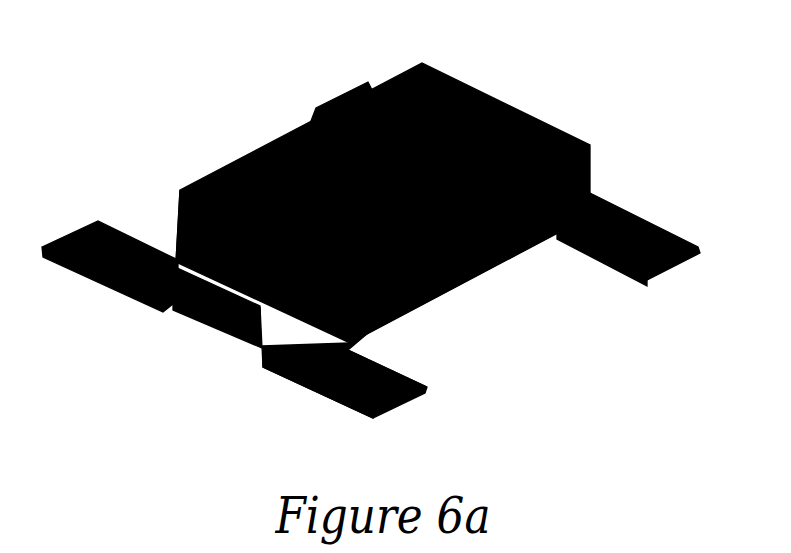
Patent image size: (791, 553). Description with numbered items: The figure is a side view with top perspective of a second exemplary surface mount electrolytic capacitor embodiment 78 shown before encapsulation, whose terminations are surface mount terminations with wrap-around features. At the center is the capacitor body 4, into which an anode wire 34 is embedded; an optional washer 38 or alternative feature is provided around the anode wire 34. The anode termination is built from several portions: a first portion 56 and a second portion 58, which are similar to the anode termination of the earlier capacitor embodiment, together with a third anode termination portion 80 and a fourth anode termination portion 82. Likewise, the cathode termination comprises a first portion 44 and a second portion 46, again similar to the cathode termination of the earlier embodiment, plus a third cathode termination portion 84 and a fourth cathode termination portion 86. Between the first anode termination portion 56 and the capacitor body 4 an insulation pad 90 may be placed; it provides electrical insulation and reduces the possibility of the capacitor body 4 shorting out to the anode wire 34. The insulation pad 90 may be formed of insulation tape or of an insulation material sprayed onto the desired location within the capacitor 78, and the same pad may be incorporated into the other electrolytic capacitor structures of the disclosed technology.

The capacitor body 4 is at (490, 264).
The anode wire 34 is at (188, 343).
The washer 38 is at (178, 238).
The first portion of the cathode termination 44 is at (628, 248).
The second portion of the cathode termination 46 is at (356, 192).
The first portion of the anode termination 56 is at (303, 378).
The second portion of the anode termination 58 is at (246, 322).
The electrolytic capacitor embodiment 78 is at (386, 246).
The third anode termination portion 80 is at (90, 259).
The fourth anode termination portion 82 is at (332, 400).
The third cathode termination portion 84 is at (314, 109).
The fourth cathode termination portion 86 is at (616, 257).
The insulation pad 90 is at (334, 349).